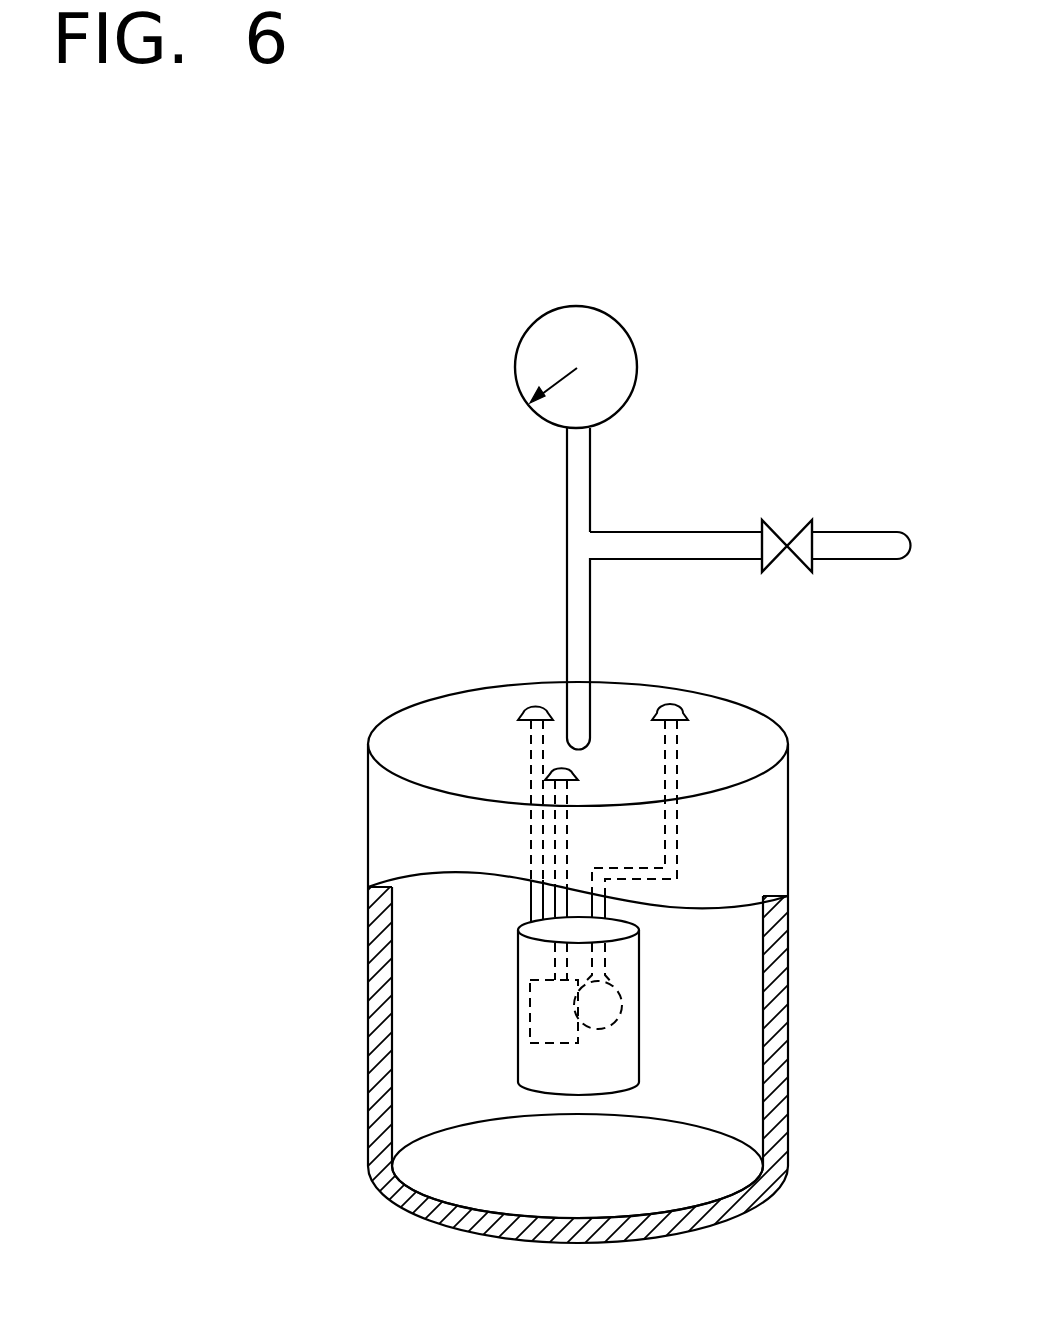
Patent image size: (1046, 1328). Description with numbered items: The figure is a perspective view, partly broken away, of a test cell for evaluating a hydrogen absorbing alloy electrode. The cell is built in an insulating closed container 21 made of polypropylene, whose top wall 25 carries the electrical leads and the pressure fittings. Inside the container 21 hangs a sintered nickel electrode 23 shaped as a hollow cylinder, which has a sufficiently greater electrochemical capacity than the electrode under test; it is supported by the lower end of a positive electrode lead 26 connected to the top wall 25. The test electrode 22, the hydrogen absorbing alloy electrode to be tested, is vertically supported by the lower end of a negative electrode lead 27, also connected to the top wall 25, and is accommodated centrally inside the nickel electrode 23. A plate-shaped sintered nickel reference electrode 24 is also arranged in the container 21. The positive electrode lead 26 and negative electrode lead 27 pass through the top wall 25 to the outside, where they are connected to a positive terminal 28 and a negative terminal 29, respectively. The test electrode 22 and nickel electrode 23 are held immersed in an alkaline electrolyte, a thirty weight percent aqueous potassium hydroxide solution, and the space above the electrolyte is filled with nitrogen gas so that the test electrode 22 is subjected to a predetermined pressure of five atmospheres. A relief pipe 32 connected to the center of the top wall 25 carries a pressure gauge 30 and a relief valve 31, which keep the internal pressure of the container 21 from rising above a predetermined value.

The insulating closed container 21 is at (788, 968).
The test electrode 22 is at (623, 1004).
The sintered nickel electrode 23 is at (640, 1060).
The sintered nickel reference electrode 24 is at (530, 1010).
The top wall 25 is at (750, 705).
The positive electrode lead 26 is at (531, 842).
The negative electrode lead 27 is at (680, 845).
The positive terminal 28 is at (535, 707).
The negative terminal 29 is at (670, 707).
The pressure gauge 30 is at (637, 367).
The relief valve 31 is at (790, 520).
The relief pipe 32 is at (672, 531).